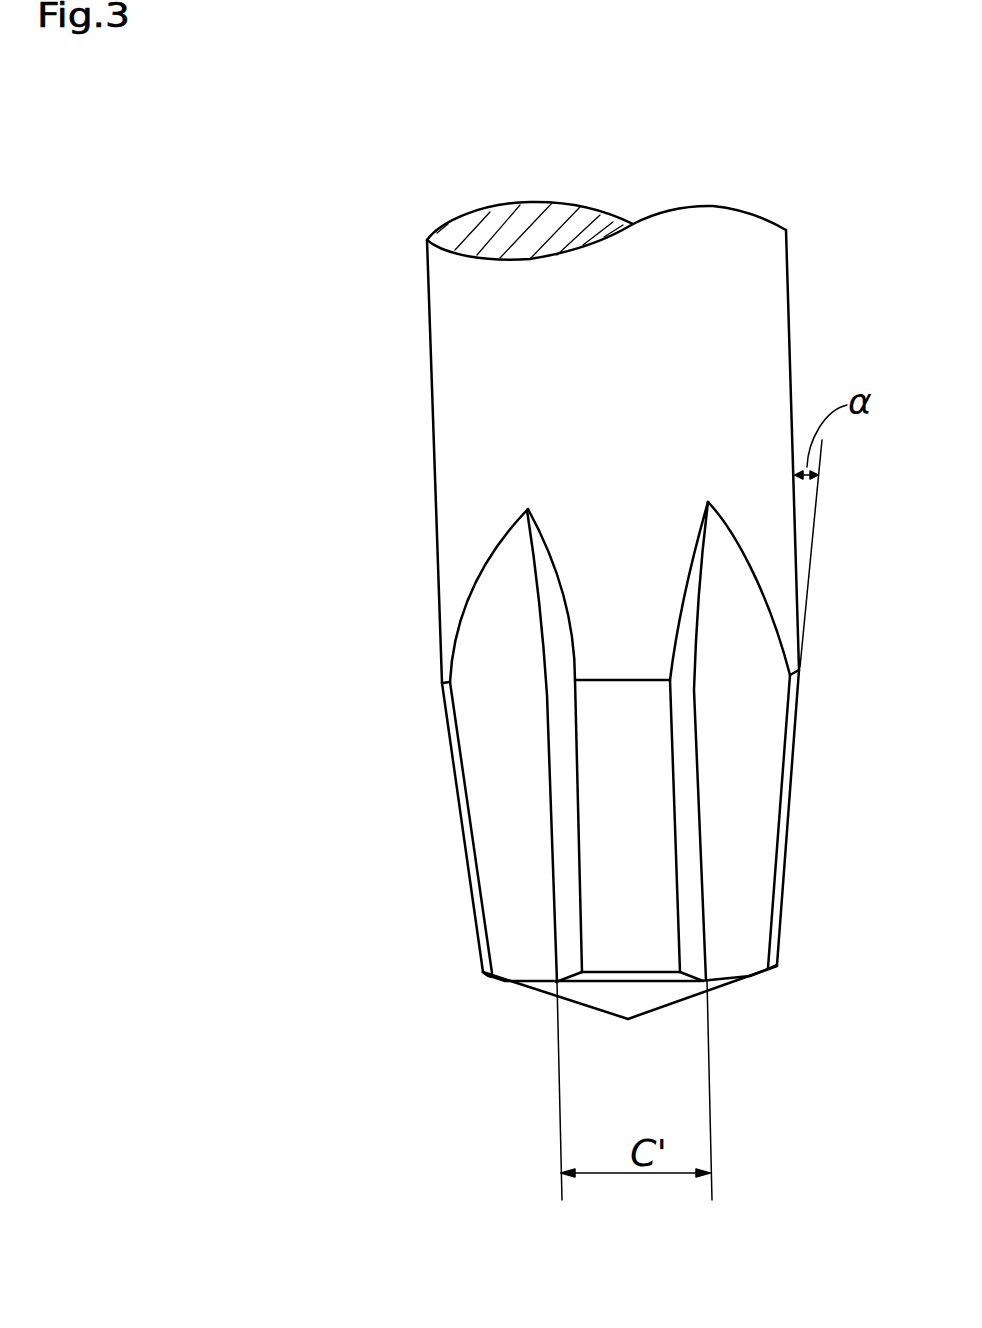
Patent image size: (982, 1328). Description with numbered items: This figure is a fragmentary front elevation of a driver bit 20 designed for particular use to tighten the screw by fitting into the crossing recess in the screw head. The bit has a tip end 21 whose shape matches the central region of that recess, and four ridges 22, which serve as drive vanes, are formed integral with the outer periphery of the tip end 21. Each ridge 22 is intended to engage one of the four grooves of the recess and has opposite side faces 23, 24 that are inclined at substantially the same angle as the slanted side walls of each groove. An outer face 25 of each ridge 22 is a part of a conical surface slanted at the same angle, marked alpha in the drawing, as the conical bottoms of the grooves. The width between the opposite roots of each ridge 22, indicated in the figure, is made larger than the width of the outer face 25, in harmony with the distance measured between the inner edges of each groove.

The driver bit 20 is at (770, 310).
The tip end 21 is at (662, 998).
The ridge 22 is at (523, 982).
The side face 23 is at (562, 772).
The side face 24 is at (485, 788).
The outer face 25 is at (462, 853).